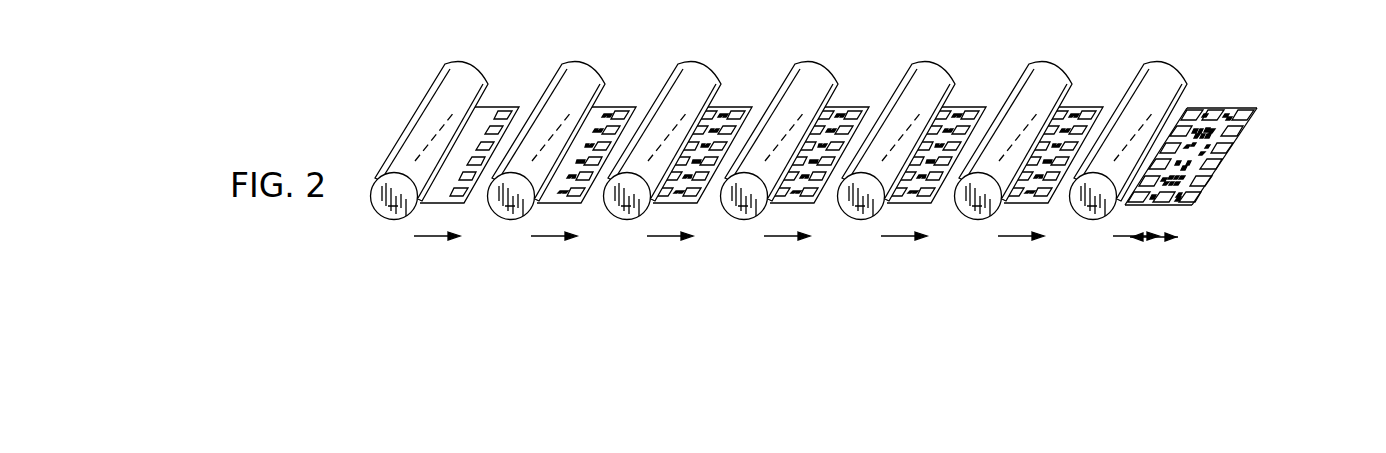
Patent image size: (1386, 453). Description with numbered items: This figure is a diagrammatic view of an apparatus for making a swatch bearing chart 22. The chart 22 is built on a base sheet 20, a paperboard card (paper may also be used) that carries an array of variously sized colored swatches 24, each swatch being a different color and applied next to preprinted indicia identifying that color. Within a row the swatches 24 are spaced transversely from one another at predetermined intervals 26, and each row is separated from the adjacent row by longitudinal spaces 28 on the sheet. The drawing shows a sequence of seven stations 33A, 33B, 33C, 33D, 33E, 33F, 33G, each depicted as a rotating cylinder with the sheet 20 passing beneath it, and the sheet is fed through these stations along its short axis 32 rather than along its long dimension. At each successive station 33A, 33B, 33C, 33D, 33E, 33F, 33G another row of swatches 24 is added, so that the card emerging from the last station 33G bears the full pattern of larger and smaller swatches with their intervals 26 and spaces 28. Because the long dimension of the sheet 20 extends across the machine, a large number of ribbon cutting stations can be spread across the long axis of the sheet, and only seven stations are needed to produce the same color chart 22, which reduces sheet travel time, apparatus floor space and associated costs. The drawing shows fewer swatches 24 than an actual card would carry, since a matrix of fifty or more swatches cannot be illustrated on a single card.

The base sheet 20 is at (492, 112).
The swatch bearing chart 22 is at (1259, 118).
The swatches 24 is at (1215, 110).
The predetermined intervals 26 is at (1202, 185).
The longitudinal spaces 28 is at (1178, 206).
The short axis 32 is at (1155, 238).
The station 33A is at (484, 60).
The station 33B is at (605, 64).
The station 33C is at (721, 64).
The station 33D is at (838, 68).
The station 33E is at (955, 70).
The station 33F is at (1072, 74).
The station 33G is at (1188, 78).